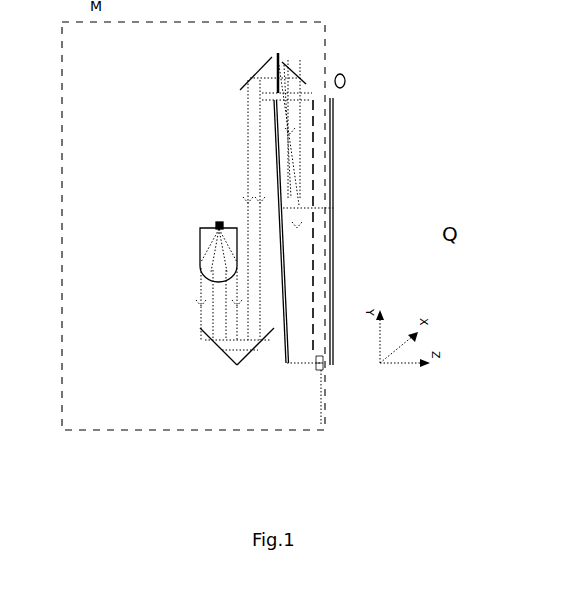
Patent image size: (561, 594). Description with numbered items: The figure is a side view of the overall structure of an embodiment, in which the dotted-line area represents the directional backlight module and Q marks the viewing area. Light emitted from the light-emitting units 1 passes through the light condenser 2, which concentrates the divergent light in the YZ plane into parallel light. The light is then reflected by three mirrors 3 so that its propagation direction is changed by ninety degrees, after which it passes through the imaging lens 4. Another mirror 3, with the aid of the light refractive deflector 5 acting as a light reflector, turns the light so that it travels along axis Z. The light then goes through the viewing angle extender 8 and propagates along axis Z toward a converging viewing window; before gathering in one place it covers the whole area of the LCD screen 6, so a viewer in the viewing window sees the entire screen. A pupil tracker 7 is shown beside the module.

The light-emitting units 1 is at (189, 199).
The light condenser 2 is at (177, 246).
The mirror 3 is at (267, 223).
The imaging lens 4 is at (327, 47).
The light refractive deflector 5 is at (214, 231).
The LCD screen 6 is at (391, 231).
The pupil tracker 7 is at (384, 75).
The viewing angle extender 8 is at (358, 258).